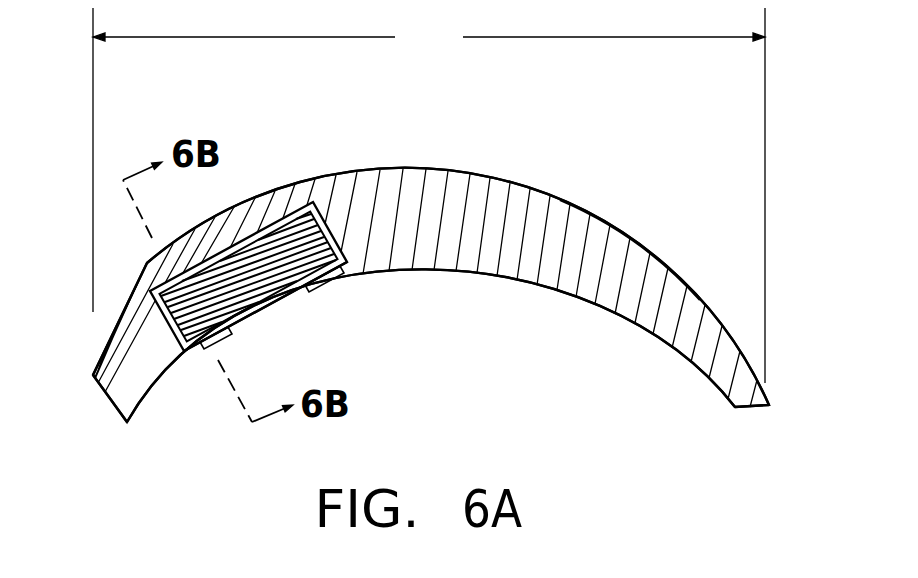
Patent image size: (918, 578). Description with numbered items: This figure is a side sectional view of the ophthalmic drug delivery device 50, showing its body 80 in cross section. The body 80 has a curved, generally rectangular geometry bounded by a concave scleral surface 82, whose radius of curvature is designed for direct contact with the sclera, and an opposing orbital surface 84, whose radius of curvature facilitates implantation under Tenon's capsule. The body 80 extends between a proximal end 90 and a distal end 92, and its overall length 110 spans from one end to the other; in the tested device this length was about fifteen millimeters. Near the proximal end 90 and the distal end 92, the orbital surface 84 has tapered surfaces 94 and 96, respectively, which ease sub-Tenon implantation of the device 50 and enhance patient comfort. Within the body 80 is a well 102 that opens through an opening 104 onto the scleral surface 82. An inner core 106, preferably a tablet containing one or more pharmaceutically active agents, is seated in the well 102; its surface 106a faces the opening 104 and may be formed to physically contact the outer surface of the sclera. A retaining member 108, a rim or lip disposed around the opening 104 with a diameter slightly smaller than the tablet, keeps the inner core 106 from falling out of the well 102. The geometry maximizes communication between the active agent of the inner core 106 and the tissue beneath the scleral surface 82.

The drug delivery device 50 is at (489, 130).
The body 80 is at (545, 278).
The scleral surface 82 is at (453, 275).
The orbital surface 84 is at (547, 192).
The proximal end 90 is at (741, 407).
The distal end 92 is at (103, 392).
The tapered surface 94 is at (627, 237).
The tapered surface 96 is at (125, 308).
The well 102 is at (262, 230).
The opening 104 is at (266, 308).
The inner core 106 is at (332, 232).
The surface 106a is at (280, 298).
The retaining member 108 is at (318, 290).
The length 110 is at (429, 37).